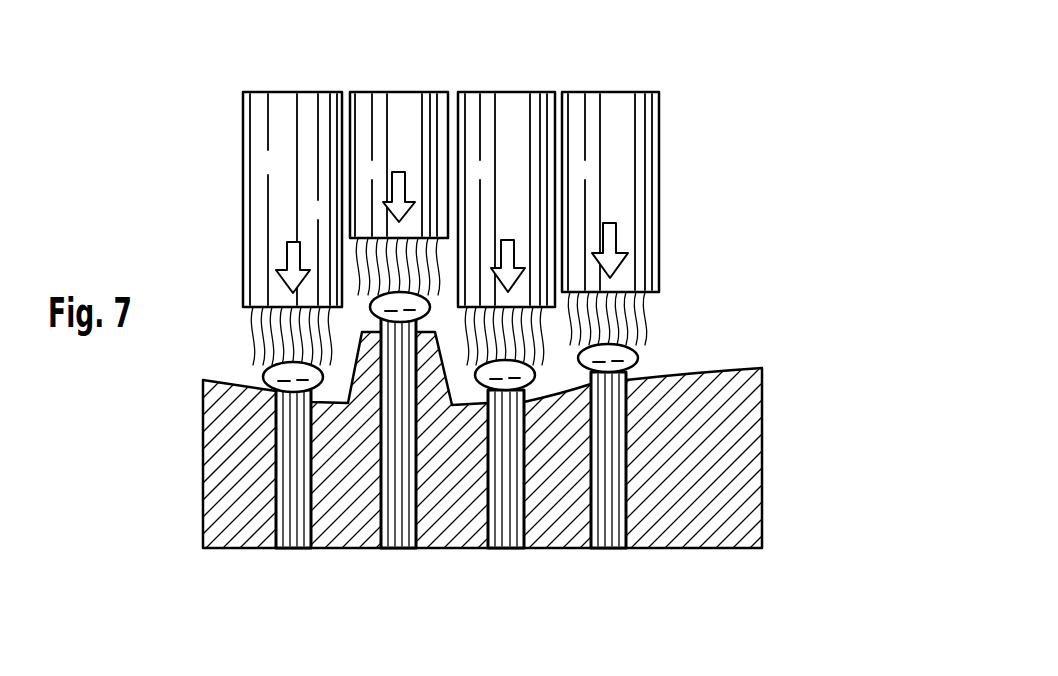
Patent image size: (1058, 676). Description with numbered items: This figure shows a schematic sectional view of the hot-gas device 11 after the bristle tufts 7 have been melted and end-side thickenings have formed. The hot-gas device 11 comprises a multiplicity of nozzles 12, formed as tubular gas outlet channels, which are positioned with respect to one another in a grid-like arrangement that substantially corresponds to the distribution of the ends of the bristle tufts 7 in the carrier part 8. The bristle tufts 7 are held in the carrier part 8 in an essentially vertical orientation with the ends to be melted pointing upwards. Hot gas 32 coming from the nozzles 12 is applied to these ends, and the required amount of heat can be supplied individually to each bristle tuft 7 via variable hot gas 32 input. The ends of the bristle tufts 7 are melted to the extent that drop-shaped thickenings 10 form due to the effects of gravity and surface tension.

The hot-gas device 11 is at (457, 190).
The nozzles 12 is at (280, 157).
The hot gas 32 is at (288, 257).
The drop-shaped thickenings 10 is at (275, 372).
The bristle tufts 7 is at (288, 549).
The carrier part 8 is at (697, 495).